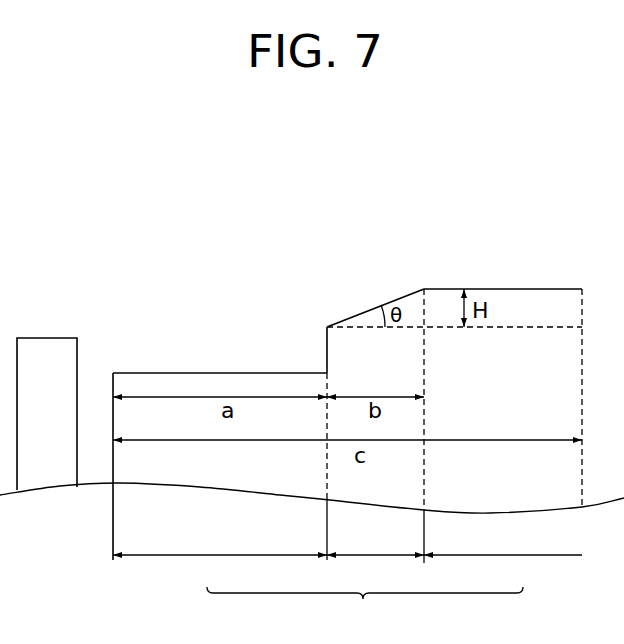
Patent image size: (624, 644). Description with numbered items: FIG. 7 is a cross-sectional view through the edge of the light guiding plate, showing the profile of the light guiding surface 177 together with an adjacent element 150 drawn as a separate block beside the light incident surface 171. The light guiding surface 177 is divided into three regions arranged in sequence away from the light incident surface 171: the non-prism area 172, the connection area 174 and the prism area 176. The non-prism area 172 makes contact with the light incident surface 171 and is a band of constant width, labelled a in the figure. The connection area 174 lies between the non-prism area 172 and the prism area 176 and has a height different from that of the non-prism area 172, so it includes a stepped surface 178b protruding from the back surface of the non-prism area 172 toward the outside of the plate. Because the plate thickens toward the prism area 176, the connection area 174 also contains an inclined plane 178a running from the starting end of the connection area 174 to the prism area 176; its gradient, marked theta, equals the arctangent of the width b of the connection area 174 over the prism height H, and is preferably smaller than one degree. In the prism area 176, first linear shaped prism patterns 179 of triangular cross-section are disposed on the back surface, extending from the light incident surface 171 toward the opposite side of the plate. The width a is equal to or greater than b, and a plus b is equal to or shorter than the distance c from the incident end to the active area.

The pixel electrode / first layer 150 is at (46, 338).
The light incident surface 171 is at (113, 390).
The non-prism area 172 is at (220, 480).
The connection area 174 is at (454, 457).
The prism area 176 is at (503, 438).
The light guiding surface 177 is at (365, 607).
The inclined plane 178a is at (373, 308).
The stepped surface 178b is at (325, 338).
The first linear shaped prism patterns 179 is at (500, 289).